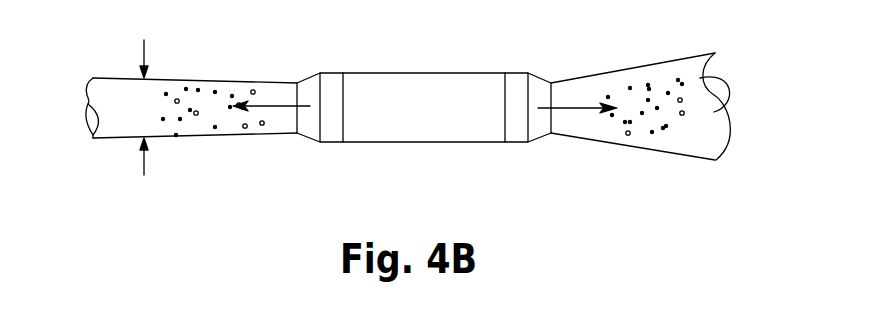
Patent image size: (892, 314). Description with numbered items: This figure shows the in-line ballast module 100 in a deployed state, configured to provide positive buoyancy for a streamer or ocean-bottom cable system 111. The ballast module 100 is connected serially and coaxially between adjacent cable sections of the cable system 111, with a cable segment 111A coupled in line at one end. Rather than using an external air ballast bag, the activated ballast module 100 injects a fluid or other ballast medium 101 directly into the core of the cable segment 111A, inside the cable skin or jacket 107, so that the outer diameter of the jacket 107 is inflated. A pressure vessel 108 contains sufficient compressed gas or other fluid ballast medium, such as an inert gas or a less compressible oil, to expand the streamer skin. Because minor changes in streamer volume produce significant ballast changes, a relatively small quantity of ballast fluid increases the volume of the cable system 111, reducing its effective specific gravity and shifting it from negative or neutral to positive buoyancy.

The ballast module 100 is at (437, 118).
The ballast medium 101 is at (630, 143).
The cable jacket 107 is at (106, 78).
The pressure vessel 108 is at (702, 53).
The cable system 111 is at (736, 52).
The cable segment 111A is at (197, 90).